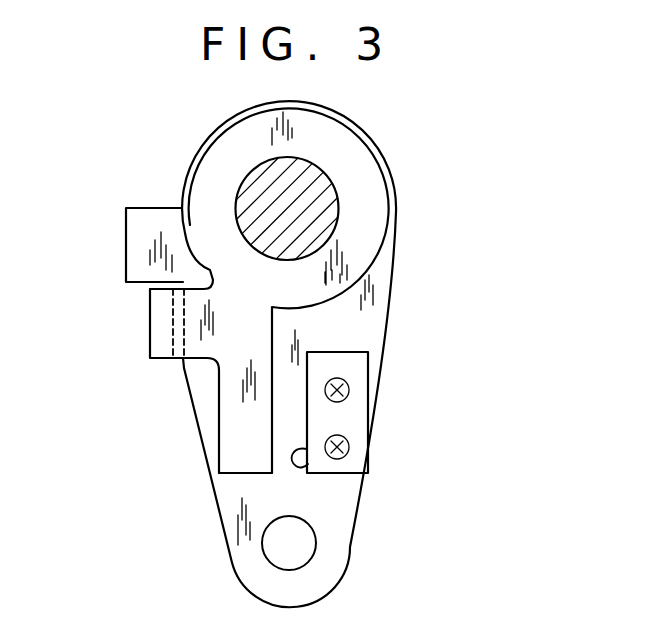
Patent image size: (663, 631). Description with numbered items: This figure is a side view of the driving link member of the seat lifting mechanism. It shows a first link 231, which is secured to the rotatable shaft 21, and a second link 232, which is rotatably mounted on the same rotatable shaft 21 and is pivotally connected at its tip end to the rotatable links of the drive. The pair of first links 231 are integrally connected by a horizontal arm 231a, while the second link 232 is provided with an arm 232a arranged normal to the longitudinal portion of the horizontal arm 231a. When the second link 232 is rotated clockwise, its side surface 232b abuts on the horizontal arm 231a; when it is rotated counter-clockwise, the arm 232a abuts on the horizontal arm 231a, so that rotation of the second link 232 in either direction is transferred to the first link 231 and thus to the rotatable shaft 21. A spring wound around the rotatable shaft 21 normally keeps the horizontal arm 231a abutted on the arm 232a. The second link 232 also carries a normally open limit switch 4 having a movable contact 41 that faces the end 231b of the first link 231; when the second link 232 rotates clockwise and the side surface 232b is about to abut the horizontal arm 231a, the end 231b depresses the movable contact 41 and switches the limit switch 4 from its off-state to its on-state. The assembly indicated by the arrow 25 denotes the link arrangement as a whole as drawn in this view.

The rotatable shaft 21 is at (307, 198).
The first link 231 is at (353, 218).
The second link 232 is at (353, 323).
The arm 232a is at (150, 227).
The horizontal arm 231a is at (148, 318).
The side surface 232b is at (173, 322).
The end of the first link 231b is at (235, 453).
The lever arm 25 is at (128, 305).
The limit switch 4 is at (345, 418).
The movable contact 41 is at (300, 465).